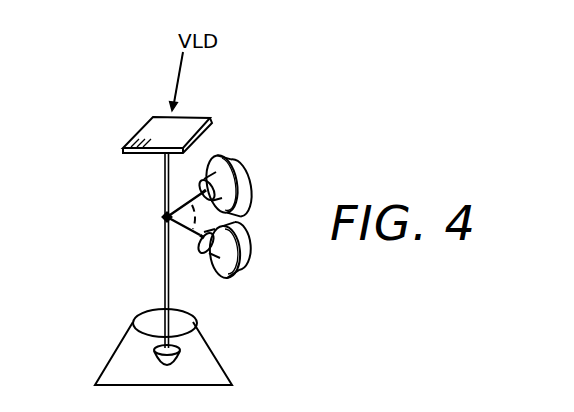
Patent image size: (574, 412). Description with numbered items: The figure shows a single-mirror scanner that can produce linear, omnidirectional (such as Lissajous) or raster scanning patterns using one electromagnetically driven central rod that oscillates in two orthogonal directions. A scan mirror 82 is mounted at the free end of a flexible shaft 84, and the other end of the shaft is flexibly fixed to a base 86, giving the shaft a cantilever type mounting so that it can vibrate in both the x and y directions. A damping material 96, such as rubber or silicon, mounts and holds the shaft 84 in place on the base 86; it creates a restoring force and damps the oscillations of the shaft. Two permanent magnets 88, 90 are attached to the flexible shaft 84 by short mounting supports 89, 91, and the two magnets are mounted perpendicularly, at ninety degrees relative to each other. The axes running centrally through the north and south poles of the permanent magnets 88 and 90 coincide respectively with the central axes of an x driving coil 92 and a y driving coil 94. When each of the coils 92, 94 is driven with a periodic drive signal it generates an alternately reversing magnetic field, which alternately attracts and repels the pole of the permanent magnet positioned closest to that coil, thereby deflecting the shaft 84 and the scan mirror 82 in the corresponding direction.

The scan mirror 82 is at (153, 117).
The flexible shaft 84 is at (164, 242).
The base 86 is at (112, 355).
The permanent magnet 88 is at (218, 156).
The mounting support 89 is at (175, 206).
The permanent magnet 90 is at (203, 255).
The mounting support 91 is at (193, 229).
The x driving coil 92 is at (243, 163).
The y driving coil 94 is at (240, 267).
The damping material 96 is at (148, 320).